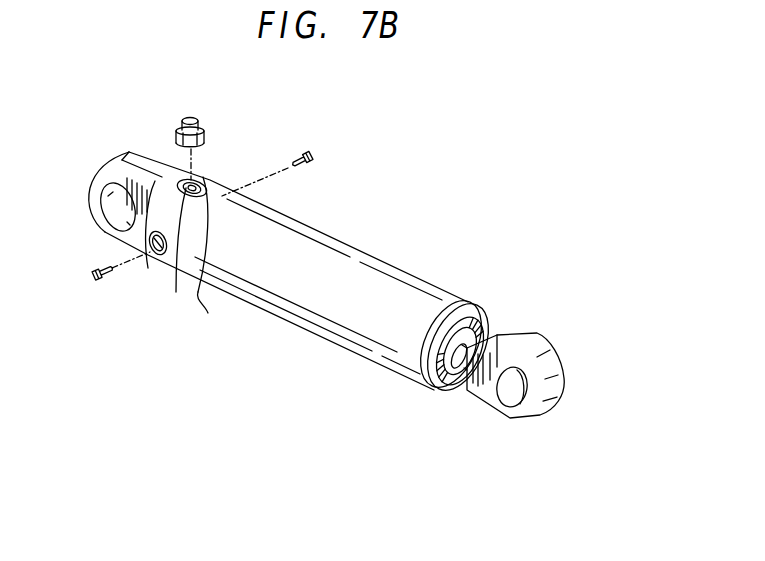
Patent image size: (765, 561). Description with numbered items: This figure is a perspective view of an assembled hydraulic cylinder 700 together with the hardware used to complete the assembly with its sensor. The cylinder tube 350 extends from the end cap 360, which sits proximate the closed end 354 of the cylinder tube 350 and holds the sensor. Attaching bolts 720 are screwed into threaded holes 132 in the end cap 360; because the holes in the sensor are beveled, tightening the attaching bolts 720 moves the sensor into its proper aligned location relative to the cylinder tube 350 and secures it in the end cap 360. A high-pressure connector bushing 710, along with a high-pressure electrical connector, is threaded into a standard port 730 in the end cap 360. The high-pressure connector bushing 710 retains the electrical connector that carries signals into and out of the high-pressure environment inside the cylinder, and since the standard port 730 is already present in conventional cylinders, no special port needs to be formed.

The hydraulic cylinder 700 is at (392, 198).
The cylinder tube 350 is at (424, 282).
The closed end 354 is at (176, 292).
The end cap 360 is at (198, 180).
The high-pressure connector bushing 710 is at (204, 128).
The attaching bolts 720 is at (312, 152).
The standard port 730 is at (215, 317).
The threaded holes 132 is at (151, 258).